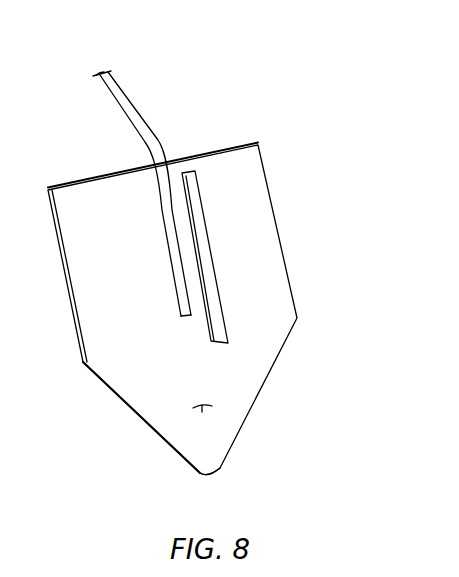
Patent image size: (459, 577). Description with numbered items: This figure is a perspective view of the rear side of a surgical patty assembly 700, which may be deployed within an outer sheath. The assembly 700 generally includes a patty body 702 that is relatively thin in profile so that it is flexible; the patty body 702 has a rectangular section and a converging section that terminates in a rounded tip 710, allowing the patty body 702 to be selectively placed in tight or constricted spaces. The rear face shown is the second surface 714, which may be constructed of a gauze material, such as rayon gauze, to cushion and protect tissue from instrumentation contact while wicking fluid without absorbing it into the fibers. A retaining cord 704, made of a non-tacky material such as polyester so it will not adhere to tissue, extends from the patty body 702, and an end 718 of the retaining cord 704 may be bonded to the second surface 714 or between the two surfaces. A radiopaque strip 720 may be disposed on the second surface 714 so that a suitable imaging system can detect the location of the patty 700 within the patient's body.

The surgical patty assembly 700 is at (318, 316).
The patty body 702 is at (72, 319).
The retaining cord 704 is at (122, 108).
The rounded tip 710 is at (217, 475).
The second surface 714 is at (202, 412).
The end 718 is at (183, 312).
The radiopaque strip 720 is at (203, 228).